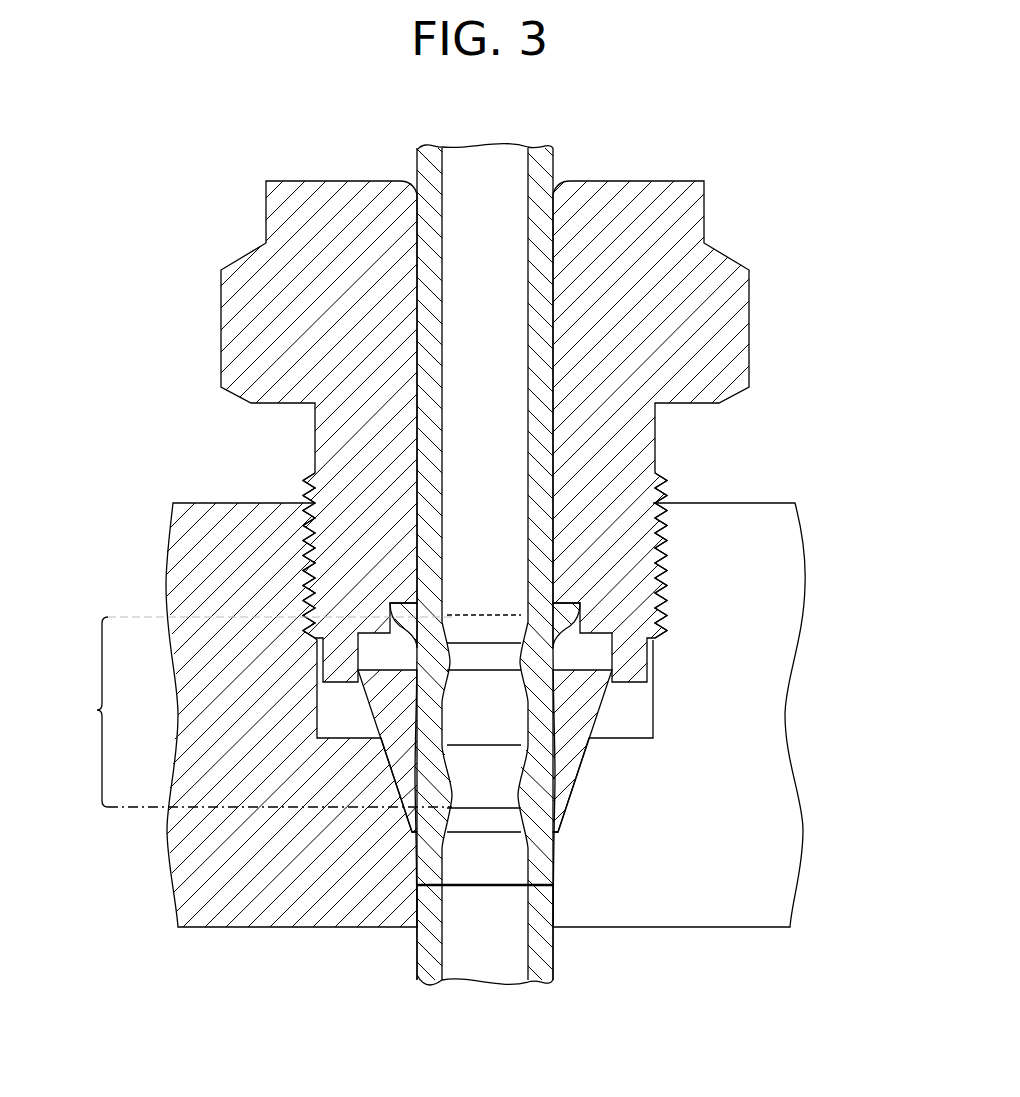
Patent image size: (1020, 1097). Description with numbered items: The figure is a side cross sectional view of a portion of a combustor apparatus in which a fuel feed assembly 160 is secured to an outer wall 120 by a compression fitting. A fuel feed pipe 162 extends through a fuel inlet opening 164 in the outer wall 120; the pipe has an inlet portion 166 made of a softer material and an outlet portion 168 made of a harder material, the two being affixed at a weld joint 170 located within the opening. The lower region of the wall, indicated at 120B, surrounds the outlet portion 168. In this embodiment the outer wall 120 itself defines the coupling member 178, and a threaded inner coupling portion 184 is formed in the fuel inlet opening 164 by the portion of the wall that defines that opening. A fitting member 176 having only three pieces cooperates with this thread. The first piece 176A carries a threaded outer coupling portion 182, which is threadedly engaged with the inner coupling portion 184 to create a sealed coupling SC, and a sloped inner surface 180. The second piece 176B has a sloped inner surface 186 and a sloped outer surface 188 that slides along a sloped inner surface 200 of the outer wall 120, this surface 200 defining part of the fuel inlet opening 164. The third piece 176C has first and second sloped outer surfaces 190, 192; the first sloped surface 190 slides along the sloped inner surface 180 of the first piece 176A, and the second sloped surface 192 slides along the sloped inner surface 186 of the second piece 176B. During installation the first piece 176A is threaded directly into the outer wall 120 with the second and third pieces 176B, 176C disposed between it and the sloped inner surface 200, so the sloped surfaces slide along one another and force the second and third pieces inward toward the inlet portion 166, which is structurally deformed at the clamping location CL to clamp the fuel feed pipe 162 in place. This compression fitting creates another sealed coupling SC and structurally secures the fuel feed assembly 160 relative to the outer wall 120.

The outer wall 120 is at (782, 836).
The lower portion of cylinder head 120B is at (200, 888).
The fuel feed assembly 160 is at (499, 567).
The fuel feed pipe 162 is at (422, 163).
The fuel inlet opening 164 is at (648, 701).
The inlet portion 166 is at (538, 268).
The outlet portion 168 is at (545, 948).
The weld joint 170 is at (484, 888).
The fitting member 176 is at (766, 303).
The first piece 176A is at (718, 347).
The second piece 176B is at (574, 760).
The third piece 176C is at (428, 622).
The coupling member 178 is at (740, 527).
The sloped inner surface 180 is at (574, 612).
The threaded outer coupling portion 182 is at (662, 604).
The threaded inner coupling portion 184 is at (654, 550).
The sloped inner surface 186 is at (560, 681).
The sloped outer surface 188 is at (594, 718).
The first sloped outer surface 190 is at (393, 614).
The second sloped outer surface 192 is at (395, 688).
The sloped inner surface 200 is at (568, 817).
The sealed coupling SC is at (298, 554).
The clamping location CL is at (257, 712).